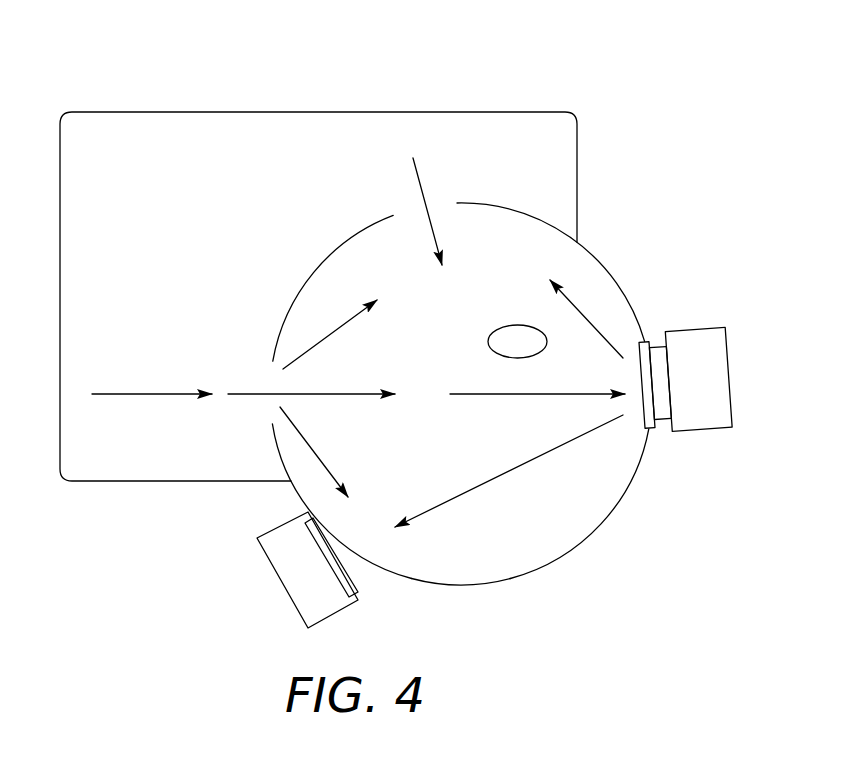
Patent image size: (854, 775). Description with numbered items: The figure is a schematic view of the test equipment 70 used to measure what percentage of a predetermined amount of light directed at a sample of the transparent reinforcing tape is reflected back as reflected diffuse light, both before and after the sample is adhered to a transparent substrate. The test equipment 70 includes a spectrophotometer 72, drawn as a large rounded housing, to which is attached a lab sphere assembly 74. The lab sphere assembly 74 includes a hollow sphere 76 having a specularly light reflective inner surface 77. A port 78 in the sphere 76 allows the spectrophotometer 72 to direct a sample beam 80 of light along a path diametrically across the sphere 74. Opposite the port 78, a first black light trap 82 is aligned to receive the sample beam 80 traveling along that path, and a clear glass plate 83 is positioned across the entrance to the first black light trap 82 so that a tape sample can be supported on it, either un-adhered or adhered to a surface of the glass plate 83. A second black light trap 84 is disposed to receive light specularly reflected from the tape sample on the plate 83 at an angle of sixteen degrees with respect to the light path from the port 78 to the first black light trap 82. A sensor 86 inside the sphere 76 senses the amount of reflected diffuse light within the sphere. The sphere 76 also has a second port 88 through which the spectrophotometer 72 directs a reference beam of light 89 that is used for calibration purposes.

The test equipment 70 is at (643, 157).
The spectrophotometer 72 is at (502, 112).
The lab sphere assembly 74 is at (606, 259).
The hollow sphere 76 is at (355, 237).
The specularly light reflective inner surface 77 is at (455, 583).
The port 78 is at (275, 367).
The sample beam 80 is at (152, 395).
The first black light trap 82 is at (720, 372).
The clear glass plate 83 is at (653, 425).
The second black light trap 84 is at (287, 577).
The sensor 86 is at (547, 341).
The port 88 is at (447, 210).
The reference beam of light 89 is at (413, 173).